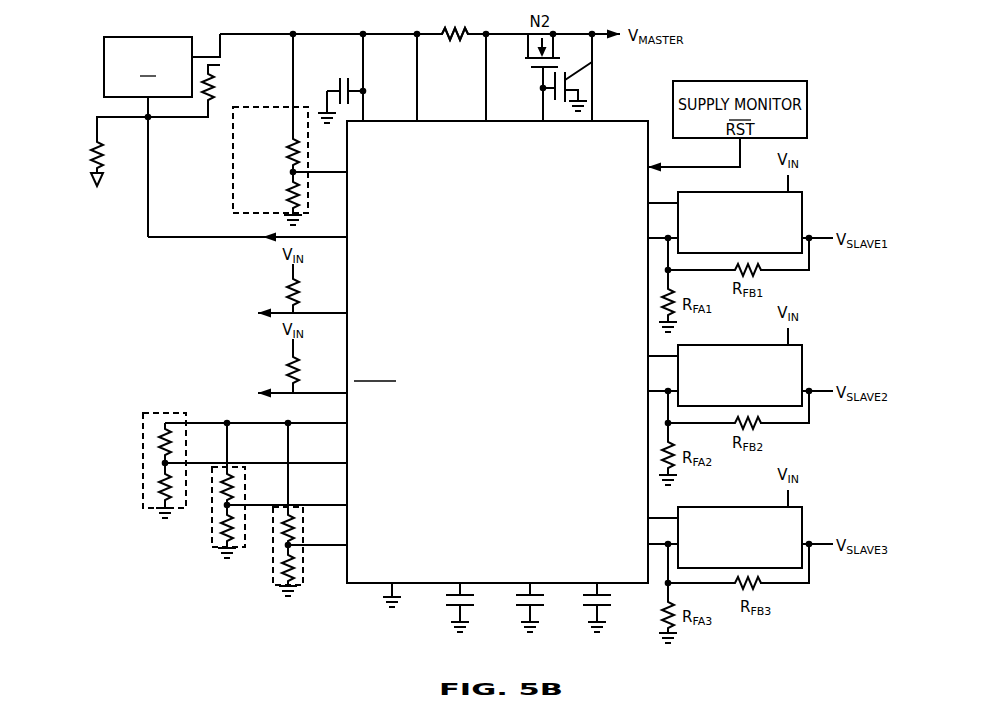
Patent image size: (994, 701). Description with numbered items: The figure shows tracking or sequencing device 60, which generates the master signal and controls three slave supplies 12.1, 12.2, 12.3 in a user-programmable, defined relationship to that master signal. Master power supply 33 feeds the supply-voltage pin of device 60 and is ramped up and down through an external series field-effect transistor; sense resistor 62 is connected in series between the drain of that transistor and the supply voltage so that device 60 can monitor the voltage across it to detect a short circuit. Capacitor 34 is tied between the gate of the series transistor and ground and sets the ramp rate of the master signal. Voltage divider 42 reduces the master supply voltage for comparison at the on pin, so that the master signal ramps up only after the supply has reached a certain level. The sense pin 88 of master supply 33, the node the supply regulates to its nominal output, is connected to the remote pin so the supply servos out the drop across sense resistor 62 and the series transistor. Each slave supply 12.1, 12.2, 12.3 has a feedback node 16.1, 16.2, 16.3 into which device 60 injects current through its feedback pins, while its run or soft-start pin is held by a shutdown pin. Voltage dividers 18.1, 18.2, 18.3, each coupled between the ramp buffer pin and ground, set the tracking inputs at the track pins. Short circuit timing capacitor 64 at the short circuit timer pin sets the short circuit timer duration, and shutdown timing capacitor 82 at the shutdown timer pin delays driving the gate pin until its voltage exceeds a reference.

The master power supply 33 is at (148, 67).
The SENSE pin 88 is at (148, 117).
The voltage divider 42 is at (233, 182).
The sense resistor 62 is at (447, 41).
The capacitor 34 is at (592, 62).
The tracking or sequencing device 60 is at (493, 354).
The slave supply 12.1 is at (795, 220).
The slave supply 12.2 is at (795, 373).
The slave supply 12.3 is at (795, 535).
The feedback node 16.1 is at (668, 240).
The feedback node 16.2 is at (668, 393).
The feedback node 16.3 is at (667, 546).
The voltage divider 18.1 is at (143, 500).
The voltage divider 18.2 is at (212, 540).
The voltage divider 18.3 is at (273, 580).
The short circuit timing capacitor 64 is at (445, 598).
The shutdown timing capacitor 82 is at (520, 598).